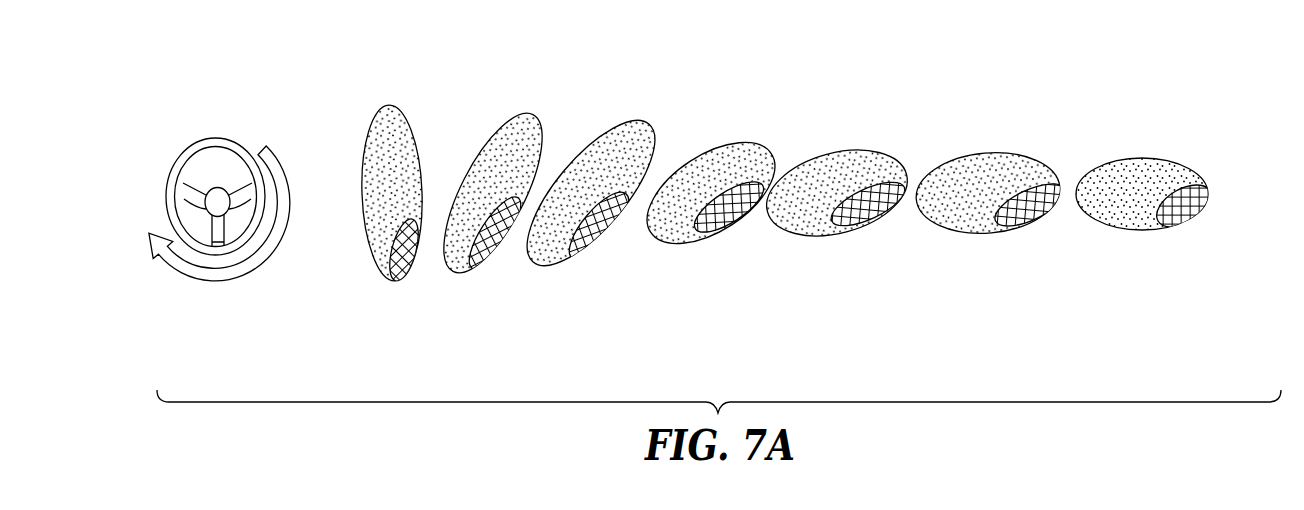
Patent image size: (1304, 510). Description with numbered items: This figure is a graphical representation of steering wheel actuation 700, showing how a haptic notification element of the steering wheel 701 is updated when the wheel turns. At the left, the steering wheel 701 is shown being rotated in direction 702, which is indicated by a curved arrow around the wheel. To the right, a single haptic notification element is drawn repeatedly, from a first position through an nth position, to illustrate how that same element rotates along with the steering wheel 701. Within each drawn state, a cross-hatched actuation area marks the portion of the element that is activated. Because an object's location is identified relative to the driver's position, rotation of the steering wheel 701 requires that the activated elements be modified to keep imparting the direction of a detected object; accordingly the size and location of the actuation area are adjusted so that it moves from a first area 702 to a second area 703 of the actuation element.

The sequence of steering wheel rotation states 700 is at (370, 99).
The steering wheel 701 is at (222, 140).
The direction of rotation 702 is at (225, 299).
The second area 703 is at (410, 130).